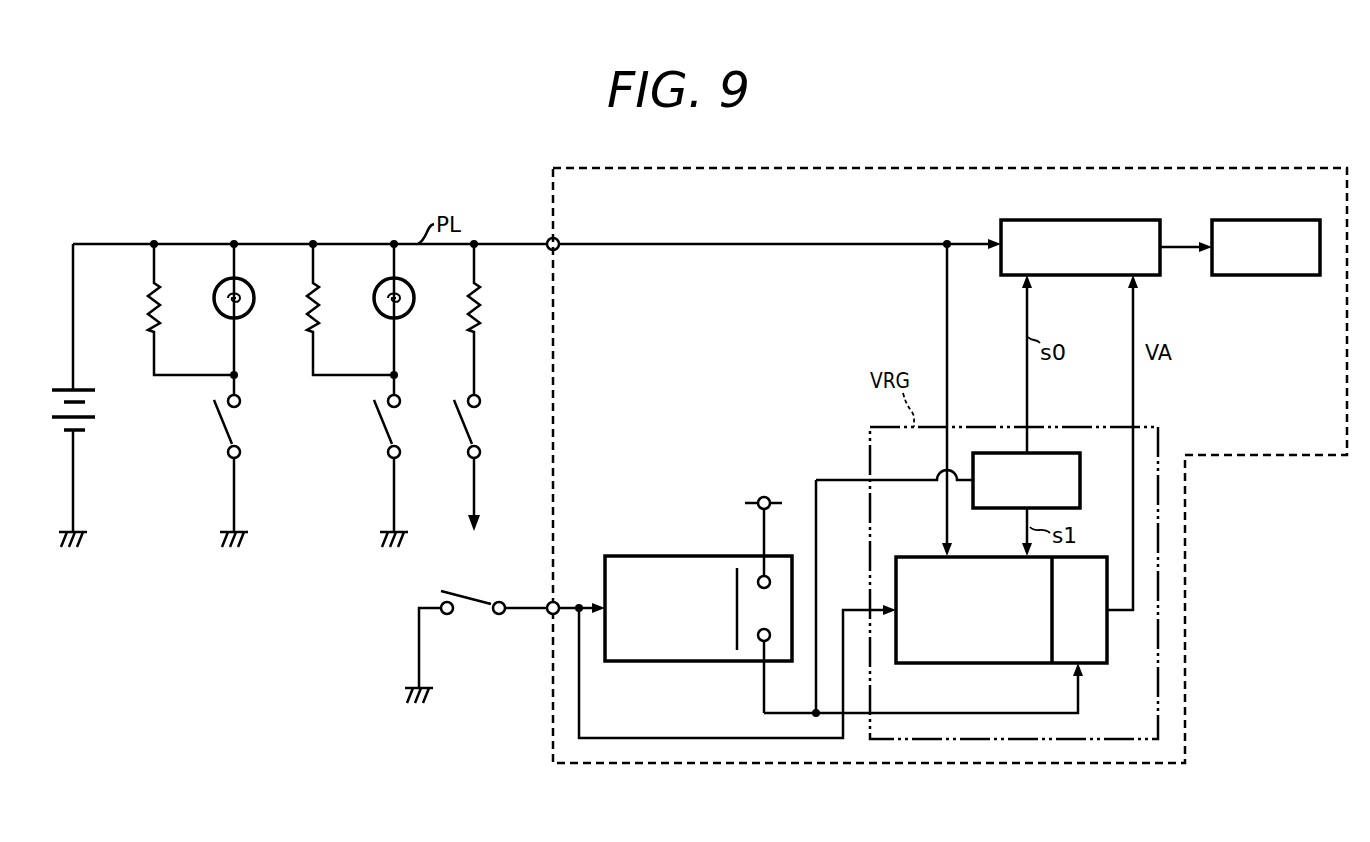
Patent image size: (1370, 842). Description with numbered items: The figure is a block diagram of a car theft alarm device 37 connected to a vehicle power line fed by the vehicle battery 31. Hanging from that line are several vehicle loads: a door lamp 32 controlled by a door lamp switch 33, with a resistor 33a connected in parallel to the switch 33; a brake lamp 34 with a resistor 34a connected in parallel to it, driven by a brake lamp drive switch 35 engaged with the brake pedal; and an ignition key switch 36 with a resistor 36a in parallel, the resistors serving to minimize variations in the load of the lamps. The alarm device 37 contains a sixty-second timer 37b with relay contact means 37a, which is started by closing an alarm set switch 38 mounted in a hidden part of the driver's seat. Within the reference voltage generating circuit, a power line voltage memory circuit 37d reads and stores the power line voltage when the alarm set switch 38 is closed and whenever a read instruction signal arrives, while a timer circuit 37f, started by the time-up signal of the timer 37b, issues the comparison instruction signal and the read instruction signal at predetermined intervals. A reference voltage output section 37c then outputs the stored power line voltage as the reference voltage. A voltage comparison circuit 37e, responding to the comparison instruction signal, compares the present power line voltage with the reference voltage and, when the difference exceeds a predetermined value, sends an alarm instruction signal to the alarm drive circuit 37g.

The vehicle battery 31 is at (62, 421).
The door lamp 32 is at (247, 313).
The switch for the door lamp 33 is at (224, 437).
The resistor 33a is at (146, 320).
The brake lamp 34 is at (407, 313).
The resistor 34a is at (307, 303).
The brake lamp drive switch 35 is at (383, 435).
The ignition key switch 36 is at (462, 433).
The resistor 36a is at (480, 328).
The car theft alarm device 37 is at (1265, 168).
The relay contact means 37a is at (737, 607).
The 60-second timer 37b is at (653, 556).
The reference voltage output section 37c is at (1098, 640).
The power line voltage memory circuit 37d is at (1001, 610).
The voltage comparison circuit 37e is at (1158, 211).
The timer circuit 37f is at (1080, 482).
The alarm drive circuit 37g is at (1317, 211).
The alarm set switch 38 is at (471, 607).